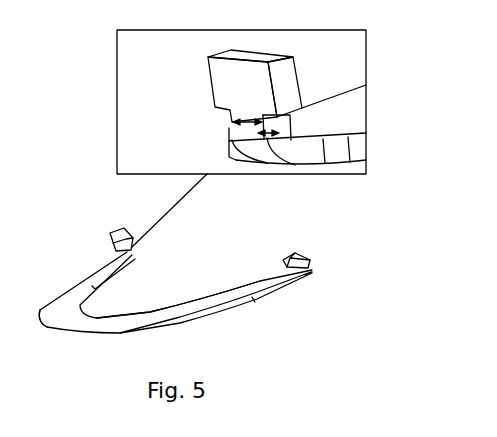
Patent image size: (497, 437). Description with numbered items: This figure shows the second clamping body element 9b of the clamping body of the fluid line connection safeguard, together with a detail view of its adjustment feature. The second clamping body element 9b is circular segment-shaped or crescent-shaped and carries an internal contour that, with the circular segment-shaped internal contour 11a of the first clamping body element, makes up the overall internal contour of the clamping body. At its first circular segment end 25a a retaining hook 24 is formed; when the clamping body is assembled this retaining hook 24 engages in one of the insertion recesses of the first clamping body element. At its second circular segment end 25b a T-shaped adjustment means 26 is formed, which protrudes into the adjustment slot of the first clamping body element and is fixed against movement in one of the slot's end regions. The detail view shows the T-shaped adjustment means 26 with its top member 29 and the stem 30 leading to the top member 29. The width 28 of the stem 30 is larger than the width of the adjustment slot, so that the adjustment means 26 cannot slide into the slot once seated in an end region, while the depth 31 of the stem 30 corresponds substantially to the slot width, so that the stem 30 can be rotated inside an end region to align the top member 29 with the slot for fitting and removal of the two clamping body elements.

The second clamping body element 9b is at (266, 323).
The circular segment-shaped internal contour 11a is at (167, 298).
The retaining hook 24 is at (283, 258).
The first circular segment end 25a is at (318, 270).
The second circular segment end 25b is at (105, 240).
The T-shaped adjustment means 26 is at (173, 90).
The width of the stem 28 is at (250, 118).
The top member 29 is at (245, 73).
The stem 30 is at (247, 130).
The depth of the stem 31 is at (277, 117).